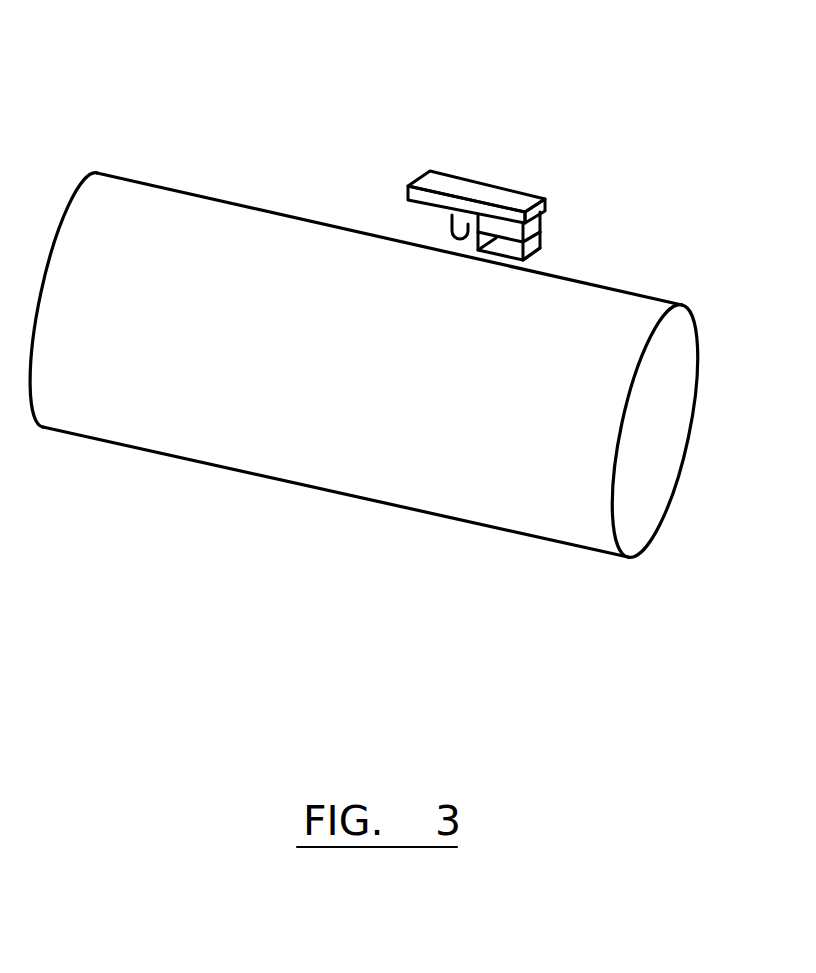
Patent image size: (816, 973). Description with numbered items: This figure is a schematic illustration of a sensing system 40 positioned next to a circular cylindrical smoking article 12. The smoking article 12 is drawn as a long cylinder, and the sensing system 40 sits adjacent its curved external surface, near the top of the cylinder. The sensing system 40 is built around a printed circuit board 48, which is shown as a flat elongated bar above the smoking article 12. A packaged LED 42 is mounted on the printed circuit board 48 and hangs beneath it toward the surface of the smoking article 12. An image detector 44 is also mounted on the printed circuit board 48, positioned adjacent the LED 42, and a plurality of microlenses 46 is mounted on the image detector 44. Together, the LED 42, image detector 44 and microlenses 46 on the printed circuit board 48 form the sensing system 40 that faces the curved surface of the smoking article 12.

The smoking article 12 is at (247, 408).
The sensing system 40 is at (533, 165).
The packaged LED 42 is at (450, 220).
The image detector 44 is at (548, 225).
The microlenses 46 is at (541, 256).
The printed circuit board 48 is at (471, 189).